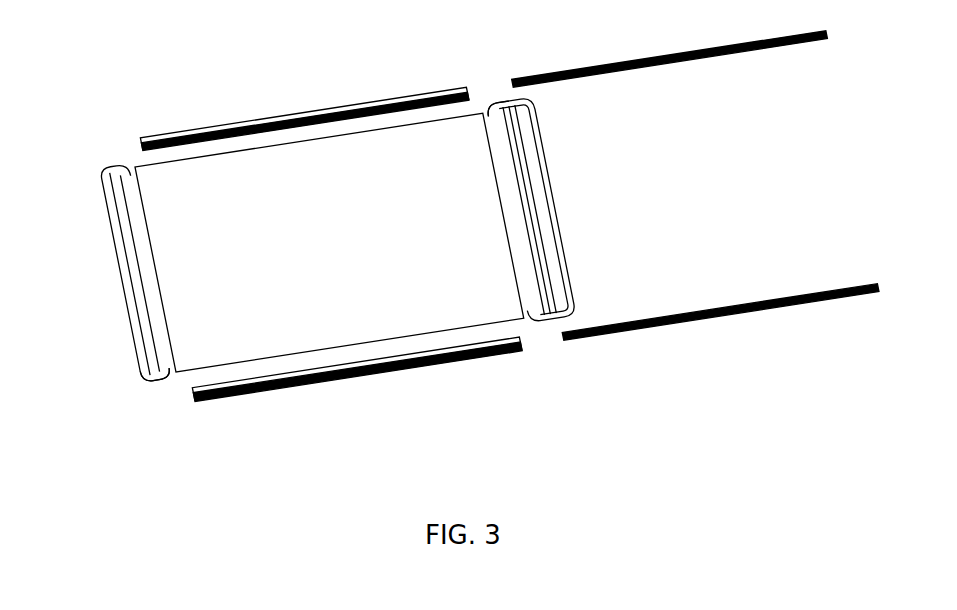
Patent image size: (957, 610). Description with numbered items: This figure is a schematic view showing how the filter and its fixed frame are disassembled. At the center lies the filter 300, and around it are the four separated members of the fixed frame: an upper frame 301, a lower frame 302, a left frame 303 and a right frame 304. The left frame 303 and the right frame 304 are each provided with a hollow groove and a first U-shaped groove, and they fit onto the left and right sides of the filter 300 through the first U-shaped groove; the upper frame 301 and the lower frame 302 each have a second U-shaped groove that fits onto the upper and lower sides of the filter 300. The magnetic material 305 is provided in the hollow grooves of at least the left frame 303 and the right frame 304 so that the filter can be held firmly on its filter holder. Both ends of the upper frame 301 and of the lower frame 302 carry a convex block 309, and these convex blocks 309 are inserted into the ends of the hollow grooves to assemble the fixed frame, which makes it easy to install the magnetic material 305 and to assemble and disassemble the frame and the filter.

The filter 300 is at (329, 242).
The upper frame 301 is at (558, 238).
The lower frame 302 is at (127, 298).
The left frame 303 is at (171, 134).
The right frame 304 is at (347, 374).
The magnetic material 305 is at (650, 67).
The convex block 309 is at (489, 106).